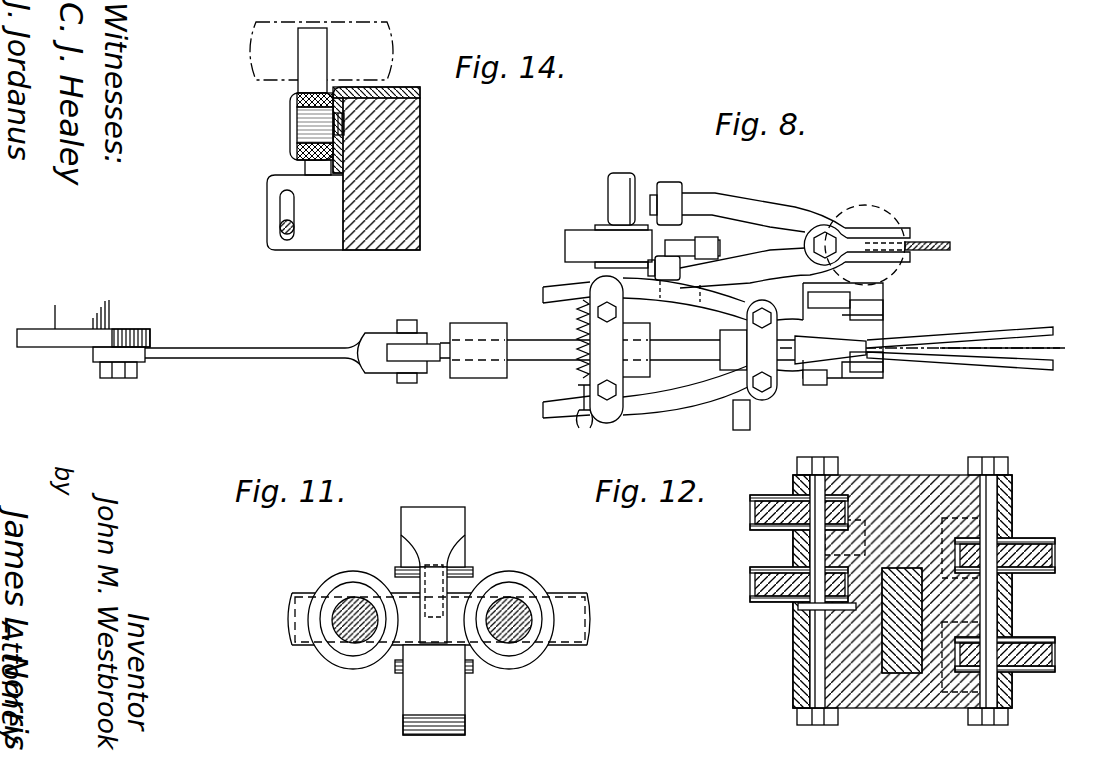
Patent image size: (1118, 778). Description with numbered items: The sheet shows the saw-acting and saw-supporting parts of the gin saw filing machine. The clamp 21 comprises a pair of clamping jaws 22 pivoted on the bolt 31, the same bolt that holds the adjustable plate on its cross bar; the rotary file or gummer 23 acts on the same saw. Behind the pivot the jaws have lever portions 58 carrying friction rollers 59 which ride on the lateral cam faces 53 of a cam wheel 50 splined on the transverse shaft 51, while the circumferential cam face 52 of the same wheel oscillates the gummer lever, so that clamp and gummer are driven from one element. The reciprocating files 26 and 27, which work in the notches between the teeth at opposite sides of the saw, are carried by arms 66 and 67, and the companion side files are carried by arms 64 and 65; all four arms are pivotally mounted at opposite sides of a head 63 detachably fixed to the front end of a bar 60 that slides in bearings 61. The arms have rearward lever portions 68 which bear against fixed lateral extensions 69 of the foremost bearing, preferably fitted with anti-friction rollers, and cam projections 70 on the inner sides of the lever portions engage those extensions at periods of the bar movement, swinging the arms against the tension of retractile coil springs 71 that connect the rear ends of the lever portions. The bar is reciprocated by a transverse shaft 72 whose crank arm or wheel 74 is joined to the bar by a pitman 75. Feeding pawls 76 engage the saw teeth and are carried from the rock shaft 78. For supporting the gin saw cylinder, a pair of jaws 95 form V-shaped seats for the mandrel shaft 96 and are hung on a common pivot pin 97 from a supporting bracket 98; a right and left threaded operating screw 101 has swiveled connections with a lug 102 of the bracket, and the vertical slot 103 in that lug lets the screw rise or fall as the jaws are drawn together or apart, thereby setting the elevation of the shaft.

In FIG. 8, the clamp 21 is at (815, 205).
In FIG. 8, the clamping jaws 22 is at (905, 230).
In FIG. 8, the rotary file or gummer 23 is at (876, 207).
In FIG. 8, the reciprocating file 26 is at (1020, 372).
In FIG. 8, the reciprocating file 27 is at (1005, 332).
In FIG. 8, the bolt 31 is at (829, 236).
In FIG. 8, the cam wheel 50 is at (589, 222).
In FIG. 11, the cam wheel 50 is at (465, 716).
In FIG. 11, the transverse shaft 51 is at (575, 632).
In FIG. 8, the circumferential cam face 52 is at (556, 249).
In FIG. 11, the circumferential cam face 52 is at (445, 499).
In FIG. 8, the lateral cam faces 53 is at (557, 230).
In FIG. 11, the lateral cam faces 53 is at (392, 529).
In FIG. 8, the lever portions 58 is at (745, 205).
In FIG. 11, the lever portions 58 is at (340, 640).
In FIG. 8, the friction rollers 59 is at (672, 190).
In FIG. 11, the friction rollers 59 is at (362, 668).
In FIG. 8, the bar 60 is at (537, 356).
In FIG. 12, the bar 60 is at (908, 665).
In FIG. 8, the bearings 61 is at (478, 372).
In FIG. 12, the bearings 61 is at (902, 576).
In FIG. 8, the head 63 is at (828, 381).
In FIG. 12, the arm 64 is at (758, 585).
In FIG. 12, the arm 65 is at (1045, 655).
In FIG. 8, the arm 66 is at (870, 330).
In FIG. 12, the arm 66 is at (758, 515).
In FIG. 8, the arm 67 is at (712, 403).
In FIG. 12, the arm 67 is at (1045, 555).
In FIG. 8, the lever portions 68 is at (612, 422).
In FIG. 8, the lateral extensions 69 is at (618, 385).
In FIG. 12, the lateral extensions 69 is at (855, 508).
In FIG. 8, the cam projections 70 is at (655, 300).
In FIG. 8, the springs 71 is at (580, 372).
In FIG. 8, the transverse shaft 72 is at (112, 312).
In FIG. 8, the crank arm or wheel 74 is at (150, 338).
In FIG. 8, the pitman 75 is at (313, 352).
In FIG. 8, the pawls 76 is at (878, 295).
In FIG. 8, the rock shaft 78 is at (752, 425).
In FIG. 14, the jaws 95 is at (309, 58).
In FIG. 14, the cylinder or mandrel shaft 96 is at (392, 32).
In FIG. 14, the pivot pin 97 is at (305, 120).
In FIG. 14, the supporting bracket 98 is at (350, 190).
In FIG. 14, the operating screw 101 is at (280, 232).
In FIG. 14, the lug 102 is at (278, 187).
In FIG. 14, the vertical slot 103 is at (284, 202).